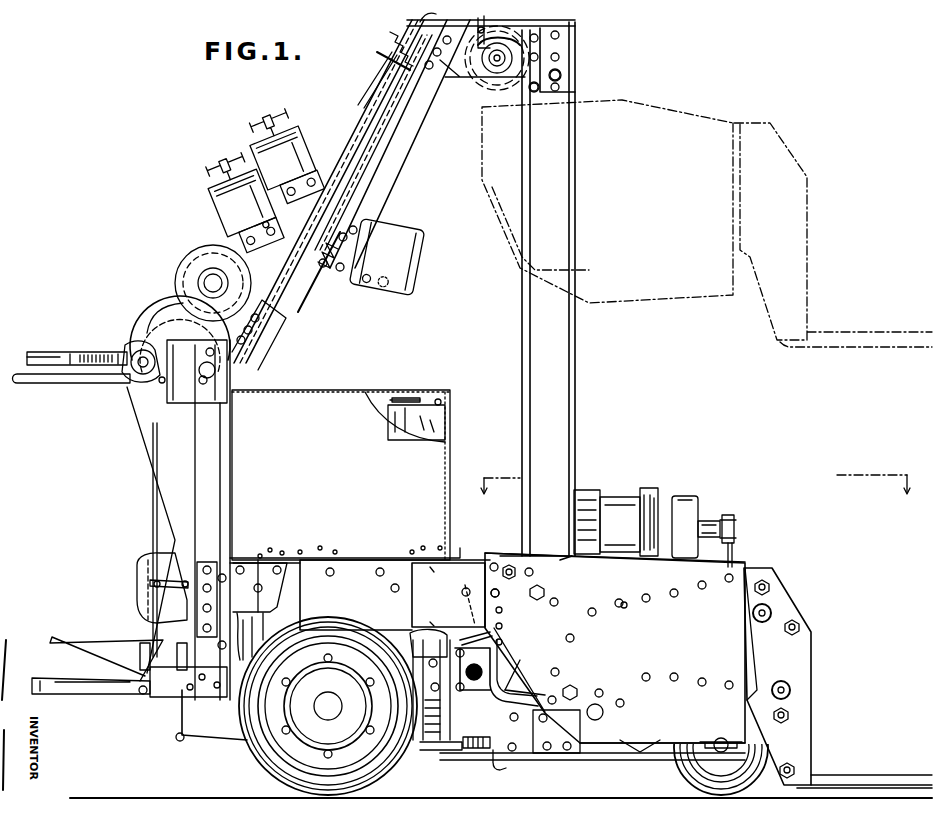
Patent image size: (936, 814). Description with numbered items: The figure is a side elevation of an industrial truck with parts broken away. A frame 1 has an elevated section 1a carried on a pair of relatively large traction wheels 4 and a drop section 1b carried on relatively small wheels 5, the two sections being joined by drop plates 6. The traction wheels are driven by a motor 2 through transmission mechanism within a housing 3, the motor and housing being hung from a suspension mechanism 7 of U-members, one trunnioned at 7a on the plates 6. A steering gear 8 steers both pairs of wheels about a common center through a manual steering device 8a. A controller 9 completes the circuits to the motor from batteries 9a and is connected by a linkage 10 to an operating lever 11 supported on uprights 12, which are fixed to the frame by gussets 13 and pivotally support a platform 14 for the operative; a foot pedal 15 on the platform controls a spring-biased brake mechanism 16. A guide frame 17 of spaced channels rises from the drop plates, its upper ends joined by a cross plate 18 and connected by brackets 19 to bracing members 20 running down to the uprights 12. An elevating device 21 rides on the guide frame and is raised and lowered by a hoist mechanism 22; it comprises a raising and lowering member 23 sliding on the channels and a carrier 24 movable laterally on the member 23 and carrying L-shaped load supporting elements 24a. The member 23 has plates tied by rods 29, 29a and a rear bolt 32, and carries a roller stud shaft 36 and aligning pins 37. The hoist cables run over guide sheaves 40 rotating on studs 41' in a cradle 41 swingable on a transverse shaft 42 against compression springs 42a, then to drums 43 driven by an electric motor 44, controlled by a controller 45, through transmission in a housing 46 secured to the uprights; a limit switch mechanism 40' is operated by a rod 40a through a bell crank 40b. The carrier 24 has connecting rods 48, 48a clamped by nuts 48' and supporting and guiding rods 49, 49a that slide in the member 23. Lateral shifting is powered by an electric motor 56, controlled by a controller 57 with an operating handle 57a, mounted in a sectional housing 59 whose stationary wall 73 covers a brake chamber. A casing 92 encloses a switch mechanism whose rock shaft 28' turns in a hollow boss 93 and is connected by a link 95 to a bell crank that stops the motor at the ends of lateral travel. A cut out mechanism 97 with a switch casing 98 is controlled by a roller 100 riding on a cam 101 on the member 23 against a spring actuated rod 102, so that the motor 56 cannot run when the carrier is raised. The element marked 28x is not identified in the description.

The frame 1 is at (487, 654).
The elevated section 1a is at (300, 560).
The drop section 1b is at (590, 760).
The motor 2 is at (416, 640).
The housing 3 is at (430, 742).
The wheels 4 is at (270, 768).
The wheels 5 is at (690, 778).
The drop plates 6 is at (695, 631).
The suspension mechanism 7 is at (472, 750).
The trunnion 7a is at (482, 668).
The steering gear 8 is at (210, 745).
The manual steering device 8a is at (24, 385).
The controller 9 is at (137, 600).
The batteries 9a is at (412, 432).
The linkage 10 is at (140, 430).
The operating lever 11 is at (40, 348).
The uprights 12 is at (198, 465).
The gussets 13 is at (253, 563).
The platform 14 is at (50, 678).
The foot pedal 15 is at (85, 655).
The brake mechanism 16 is at (250, 612).
The guide frame 17 is at (584, 289).
The cross plate 18 is at (575, 70).
The brackets 19 is at (435, 13).
The bracing members 20 is at (358, 150).
The elevating device 21 is at (615, 653).
The hoist mechanism 22 is at (514, 293).
The raising and lowering member 23 is at (650, 760).
The carrier 24 is at (811, 655).
The load supporting elements 24a is at (880, 786).
The rock shaft 28' is at (732, 520).
The carriage 28x is at (382, 300).
The rod 29 is at (770, 608).
The rod 29a is at (790, 688).
The bolt 32 is at (514, 566).
The stud shaft 36 is at (602, 708).
The pins 37 is at (542, 588).
The guide sheaves 40 is at (490, 76).
The rod 40a is at (388, 180).
The bell crank 40b is at (486, 22).
The limit switch mechanism 40' is at (365, 173).
The cradle 41 is at (482, 83).
The studs 41' is at (498, 88).
The transverse shaft 42 is at (560, 78).
The compression springs 42a is at (380, 40).
The drums 43 is at (148, 322).
The electric motor 44 is at (200, 262).
The controller 45 is at (212, 203).
The housing 46 is at (158, 305).
The connecting rod 48 is at (811, 623).
The nuts 48' is at (819, 674).
The connecting rod 48a is at (794, 768).
The supporting and guiding rod 49 is at (769, 584).
The supporting and guiding rod 49a is at (788, 714).
The electric motor 56 is at (595, 512).
The controller 57 is at (324, 132).
The operating handle 57a is at (258, 118).
The sectional housing 59 is at (620, 500).
The stationary wall 73 is at (660, 495).
The casing 92 is at (690, 496).
The hollow boss 93 is at (706, 521).
The link 95 is at (734, 556).
The cut out mechanism 97 is at (501, 594).
The casing 98 is at (448, 595).
The roller 100 is at (492, 634).
The cam 101 is at (529, 677).
The spring actuated rod 102 is at (472, 618).